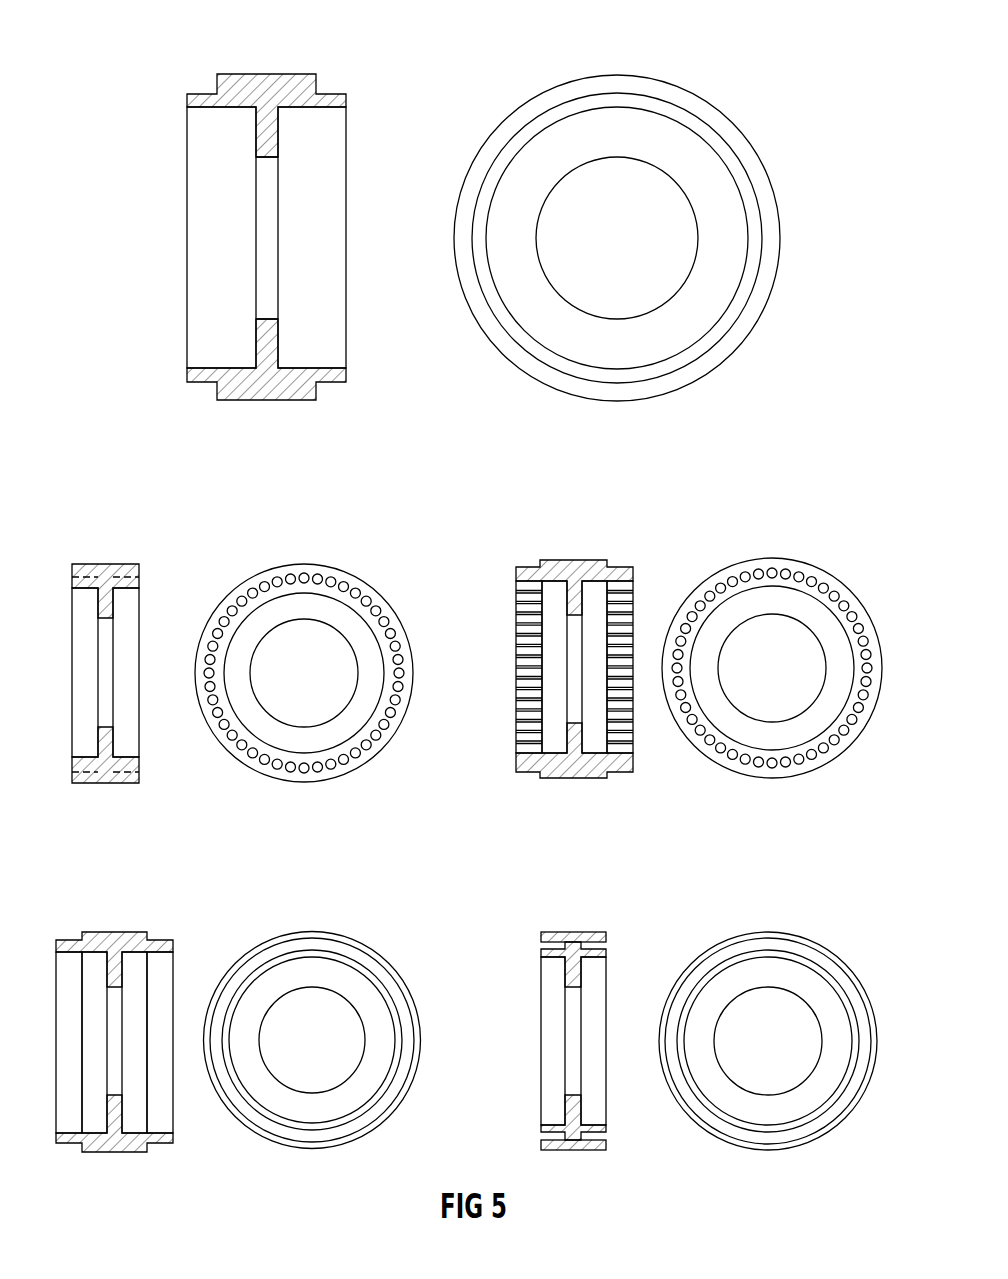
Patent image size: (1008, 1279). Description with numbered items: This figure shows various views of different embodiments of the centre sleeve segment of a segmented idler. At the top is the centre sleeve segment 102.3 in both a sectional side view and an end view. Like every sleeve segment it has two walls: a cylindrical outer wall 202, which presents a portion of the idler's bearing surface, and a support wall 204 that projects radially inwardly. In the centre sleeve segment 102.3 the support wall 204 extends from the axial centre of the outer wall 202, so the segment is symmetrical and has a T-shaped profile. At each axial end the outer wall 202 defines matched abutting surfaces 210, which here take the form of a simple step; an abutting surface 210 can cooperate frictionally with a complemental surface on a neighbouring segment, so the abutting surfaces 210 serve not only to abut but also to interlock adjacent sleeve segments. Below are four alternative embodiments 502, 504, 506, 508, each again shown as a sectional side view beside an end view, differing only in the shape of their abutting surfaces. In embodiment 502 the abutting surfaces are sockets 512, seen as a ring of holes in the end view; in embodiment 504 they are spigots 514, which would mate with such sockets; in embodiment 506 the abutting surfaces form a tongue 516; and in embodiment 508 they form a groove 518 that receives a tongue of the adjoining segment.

The centre sleeve segment 102.3 is at (758, 108).
The cylindrical outer wall 202 is at (267, 200).
The support wall 204 is at (260, 137).
The abutting surfaces 210 is at (187, 94).
The alternative centre sleeve segment embodiment 502 is at (337, 555).
The alternative centre sleeve segment embodiment 504 is at (807, 552).
The alternative centre sleeve segment embodiment 506 is at (368, 933).
The alternative centre sleeve segment embodiment 508 is at (803, 933).
The sockets 512 is at (140, 573).
The spigots 514 is at (635, 568).
The tongue 516 is at (170, 945).
The groove 518 is at (607, 945).